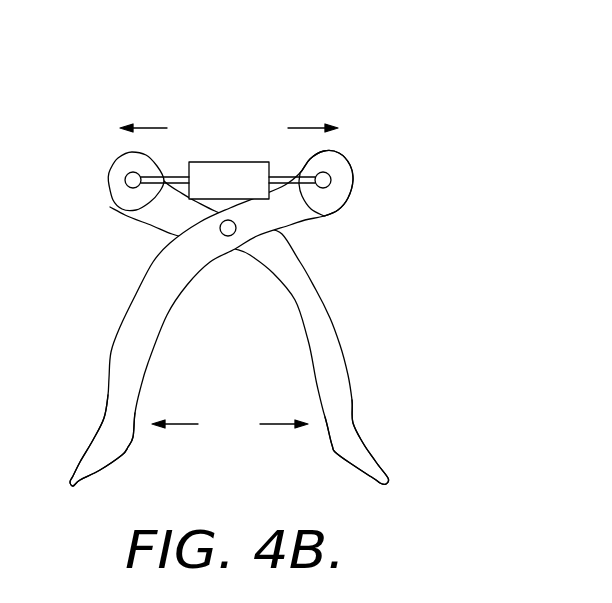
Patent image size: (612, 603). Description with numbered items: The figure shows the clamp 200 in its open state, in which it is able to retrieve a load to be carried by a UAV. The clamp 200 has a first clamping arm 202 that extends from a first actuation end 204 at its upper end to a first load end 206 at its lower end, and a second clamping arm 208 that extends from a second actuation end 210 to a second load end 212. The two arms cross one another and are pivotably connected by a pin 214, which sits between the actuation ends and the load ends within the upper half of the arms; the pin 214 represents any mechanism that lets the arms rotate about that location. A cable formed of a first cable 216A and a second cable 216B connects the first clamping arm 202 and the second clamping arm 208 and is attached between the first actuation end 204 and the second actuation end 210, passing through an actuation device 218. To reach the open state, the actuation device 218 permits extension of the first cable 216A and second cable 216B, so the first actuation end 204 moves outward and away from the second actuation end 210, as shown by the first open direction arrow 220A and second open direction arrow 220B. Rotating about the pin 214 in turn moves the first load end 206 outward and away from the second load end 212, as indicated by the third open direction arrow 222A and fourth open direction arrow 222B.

The clamp 200 is at (206, 56).
The first clamping arm 202 is at (116, 341).
The first actuation end 204 is at (351, 164).
The first load end 206 is at (73, 485).
The second clamping arm 208 is at (344, 326).
The second actuation end 210 is at (112, 164).
The second load end 212 is at (385, 487).
The pin 214 is at (228, 237).
The first cable 216A is at (130, 210).
The second cable 216B is at (328, 215).
The actuation device 218 is at (227, 161).
The first open direction arrow 220A is at (153, 127).
The second open direction arrow 220B is at (306, 127).
The third open direction arrow 222A is at (183, 426).
The fourth open direction arrow 222B is at (272, 426).